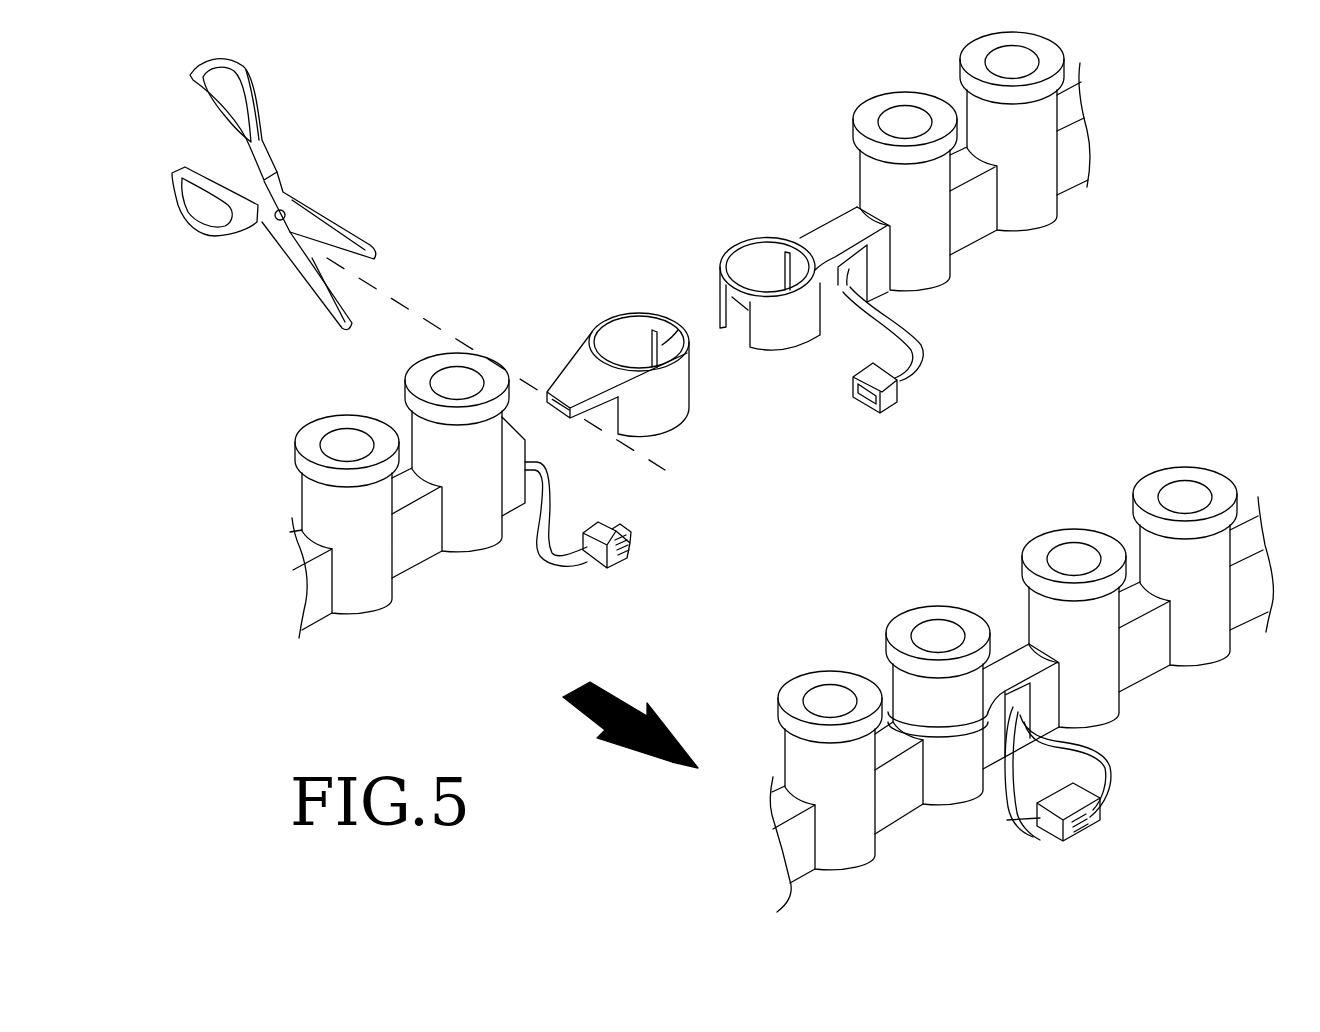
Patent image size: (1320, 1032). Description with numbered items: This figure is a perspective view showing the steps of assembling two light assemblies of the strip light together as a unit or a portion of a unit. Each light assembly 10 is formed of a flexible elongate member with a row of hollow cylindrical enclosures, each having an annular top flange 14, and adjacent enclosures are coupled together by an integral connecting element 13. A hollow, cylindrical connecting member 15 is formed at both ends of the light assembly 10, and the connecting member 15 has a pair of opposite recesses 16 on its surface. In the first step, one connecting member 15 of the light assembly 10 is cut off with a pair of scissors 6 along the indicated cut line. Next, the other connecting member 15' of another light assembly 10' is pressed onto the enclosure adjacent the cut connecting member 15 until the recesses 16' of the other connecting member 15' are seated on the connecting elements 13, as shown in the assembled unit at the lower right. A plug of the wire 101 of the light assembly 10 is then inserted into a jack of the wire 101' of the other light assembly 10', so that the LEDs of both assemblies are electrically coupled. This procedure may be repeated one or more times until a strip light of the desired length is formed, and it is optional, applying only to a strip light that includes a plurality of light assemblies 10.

The scissors 6 is at (248, 87).
The light assembly 10 is at (586, 642).
The another light assembly 10' is at (1063, 396).
The connecting element 13 is at (882, 749).
The annular top flange 14 is at (414, 382).
The connecting member 15 is at (624, 325).
The other connecting member 15' is at (865, 530).
The recesses 16 is at (617, 316).
The recesses of the other connecting member 16' is at (896, 563).
The wire 101 is at (812, 698).
The wire of another light assembly 101' is at (1037, 563).